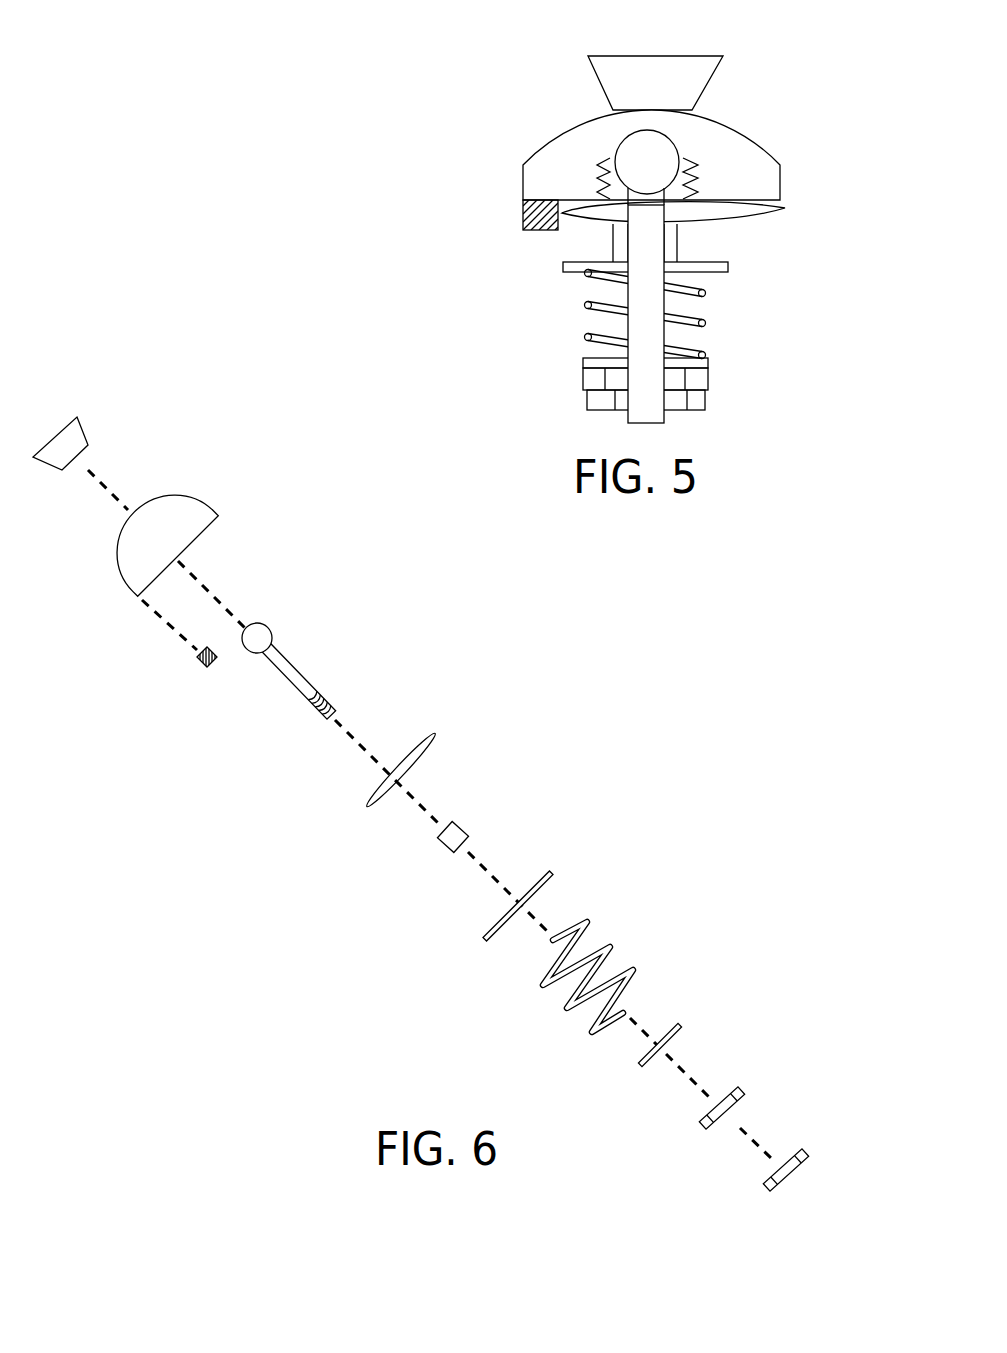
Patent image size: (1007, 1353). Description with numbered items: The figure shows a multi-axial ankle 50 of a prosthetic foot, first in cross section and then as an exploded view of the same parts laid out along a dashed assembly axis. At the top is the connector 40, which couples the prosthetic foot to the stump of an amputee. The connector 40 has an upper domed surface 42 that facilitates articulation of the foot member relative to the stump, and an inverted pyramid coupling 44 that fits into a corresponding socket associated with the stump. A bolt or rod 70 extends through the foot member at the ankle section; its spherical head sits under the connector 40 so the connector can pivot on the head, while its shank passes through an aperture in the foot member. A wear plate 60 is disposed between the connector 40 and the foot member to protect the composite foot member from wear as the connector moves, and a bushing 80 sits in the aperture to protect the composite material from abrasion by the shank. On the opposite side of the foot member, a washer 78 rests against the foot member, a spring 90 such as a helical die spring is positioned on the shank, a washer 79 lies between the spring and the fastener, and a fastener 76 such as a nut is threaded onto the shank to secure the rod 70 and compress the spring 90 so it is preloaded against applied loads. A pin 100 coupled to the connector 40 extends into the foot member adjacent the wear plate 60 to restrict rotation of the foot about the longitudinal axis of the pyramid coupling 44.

In FIG. 5, the connector 40 is at (450, 96).
In FIG. 5, the ankle 50 is at (410, 184).
In FIG. 6, the upper domed surface 42 is at (168, 512).
In FIG. 6, the inverted pyramid coupling 44 is at (70, 443).
In FIG. 6, the rod 70 is at (258, 634).
In FIG. 6, the pin 100 is at (208, 665).
In FIG. 6, the wear plate 60 is at (403, 762).
In FIG. 6, the bushing 80 is at (452, 823).
In FIG. 6, the washer 78 is at (523, 891).
In FIG. 6, the spring 90 is at (596, 947).
In FIG. 6, the washer 79 is at (660, 1038).
In FIG. 6, the fastener 76 is at (717, 1100).